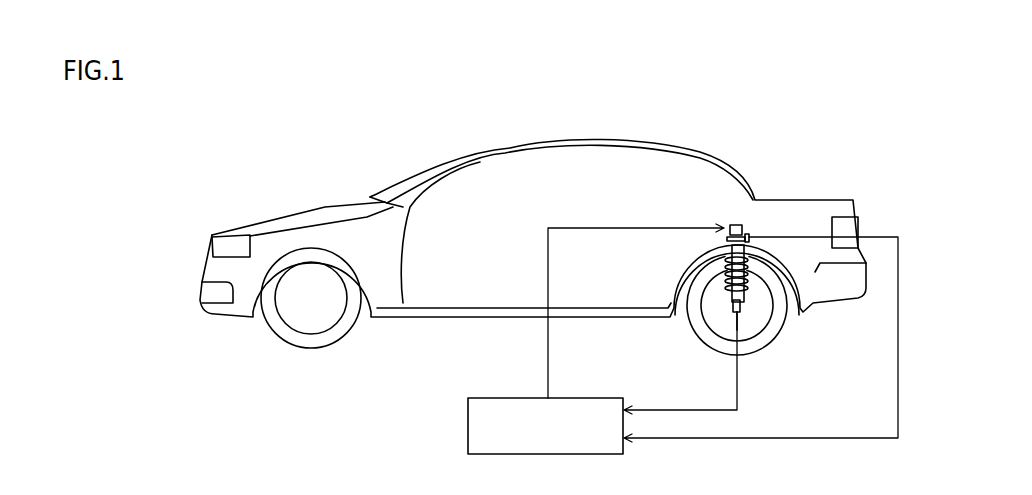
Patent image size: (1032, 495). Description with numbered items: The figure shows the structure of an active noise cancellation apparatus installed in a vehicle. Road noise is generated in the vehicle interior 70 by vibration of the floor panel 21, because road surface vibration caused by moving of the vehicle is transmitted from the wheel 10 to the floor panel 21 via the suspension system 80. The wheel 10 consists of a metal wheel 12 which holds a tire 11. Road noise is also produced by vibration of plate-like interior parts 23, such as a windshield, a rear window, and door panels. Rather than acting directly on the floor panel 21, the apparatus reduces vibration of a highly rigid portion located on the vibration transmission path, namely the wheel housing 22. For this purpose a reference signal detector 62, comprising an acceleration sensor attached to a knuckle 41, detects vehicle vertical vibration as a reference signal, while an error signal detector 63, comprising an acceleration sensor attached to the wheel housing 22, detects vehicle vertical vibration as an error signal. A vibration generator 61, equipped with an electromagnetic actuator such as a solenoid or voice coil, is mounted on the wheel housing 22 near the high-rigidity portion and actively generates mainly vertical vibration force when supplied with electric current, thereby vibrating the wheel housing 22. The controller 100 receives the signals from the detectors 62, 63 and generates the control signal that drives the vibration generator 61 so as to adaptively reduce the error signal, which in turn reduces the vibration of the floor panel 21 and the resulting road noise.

The wheel 10 is at (771, 329).
The tire 11 is at (778, 317).
The metal wheel 12 is at (782, 333).
The floor panel 21 is at (490, 317).
The wheel housing 22 is at (780, 248).
The plate-like interior parts 23 is at (442, 285).
The knuckle 41 is at (722, 320).
The vibration generator 61 is at (744, 233).
The reference signal detector 62 is at (742, 310).
The error signal detector 63 is at (748, 236).
The vehicle interior 70 is at (533, 159).
The suspension system 80 is at (714, 316).
The controller 100 is at (585, 397).